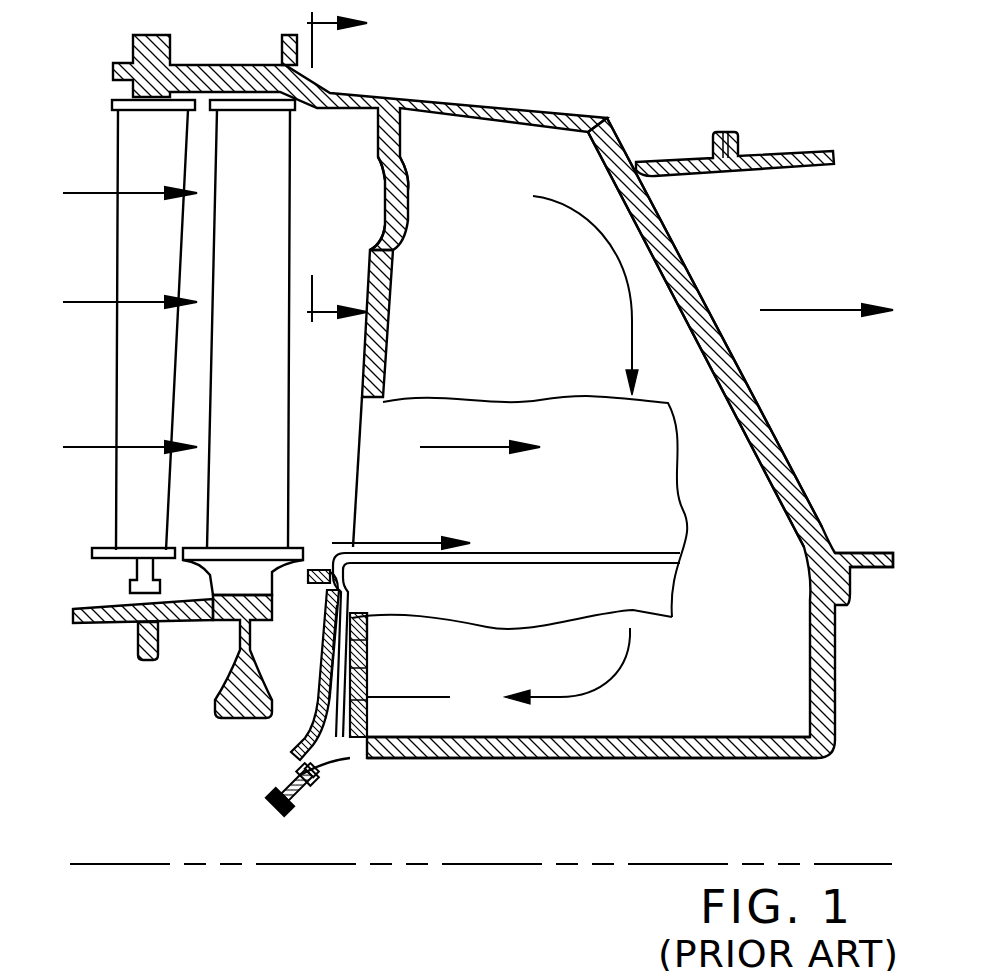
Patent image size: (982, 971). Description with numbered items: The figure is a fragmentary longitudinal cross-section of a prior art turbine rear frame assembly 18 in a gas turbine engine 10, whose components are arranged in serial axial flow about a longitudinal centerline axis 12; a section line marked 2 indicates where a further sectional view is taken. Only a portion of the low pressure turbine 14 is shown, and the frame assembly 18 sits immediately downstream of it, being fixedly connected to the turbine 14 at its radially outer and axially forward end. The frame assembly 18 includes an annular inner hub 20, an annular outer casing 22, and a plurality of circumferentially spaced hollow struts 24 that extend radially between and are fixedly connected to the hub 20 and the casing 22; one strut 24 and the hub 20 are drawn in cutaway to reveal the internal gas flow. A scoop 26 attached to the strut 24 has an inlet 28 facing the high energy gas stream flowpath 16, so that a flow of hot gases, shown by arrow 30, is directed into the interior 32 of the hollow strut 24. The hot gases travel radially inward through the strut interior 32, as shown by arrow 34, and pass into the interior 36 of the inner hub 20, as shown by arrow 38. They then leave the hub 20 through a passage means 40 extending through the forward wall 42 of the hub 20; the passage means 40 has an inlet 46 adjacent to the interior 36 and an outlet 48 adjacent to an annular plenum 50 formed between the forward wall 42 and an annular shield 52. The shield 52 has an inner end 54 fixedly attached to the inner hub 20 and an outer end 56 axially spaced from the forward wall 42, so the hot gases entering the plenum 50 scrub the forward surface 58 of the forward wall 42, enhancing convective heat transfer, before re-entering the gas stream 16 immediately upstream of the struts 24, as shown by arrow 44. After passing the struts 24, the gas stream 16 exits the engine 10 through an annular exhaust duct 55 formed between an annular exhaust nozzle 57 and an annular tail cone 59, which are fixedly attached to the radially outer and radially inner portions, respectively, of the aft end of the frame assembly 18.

The gas turbine engine 10 is at (725, 100).
The longitudinal centerline axis 12 is at (660, 866).
The low pressure turbine 14 is at (258, 64).
The high energy gas stream flowpath 16 is at (114, 192).
The turbine rear frame assembly 18 is at (620, 120).
The inner hub 20 is at (520, 757).
The outer casing 22 is at (460, 105).
The hollow strut 24 is at (387, 460).
The scoop 26 is at (387, 230).
The inlet 28 is at (387, 197).
The arrow 30 is at (418, 187).
The interior 32 is at (538, 287).
The arrow 34 is at (630, 317).
The interior 36 is at (519, 675).
The arrow 38 is at (628, 630).
The passage means 40 is at (358, 678).
The forward wall 42 is at (427, 637).
The arrow 44 is at (372, 543).
The inlet 46 is at (360, 700).
The outlet 48 is at (327, 684).
The annular plenum 50 is at (323, 733).
The annular shield 52 is at (330, 617).
The inner end 54 is at (272, 790).
The annular exhaust duct 55 is at (840, 383).
The outer end 56 is at (330, 585).
The annular exhaust nozzle 57 is at (757, 173).
The forward surface 58 is at (368, 616).
The annular tail cone 59 is at (852, 552).
The section line for FIG. 2 is at (339, 167).